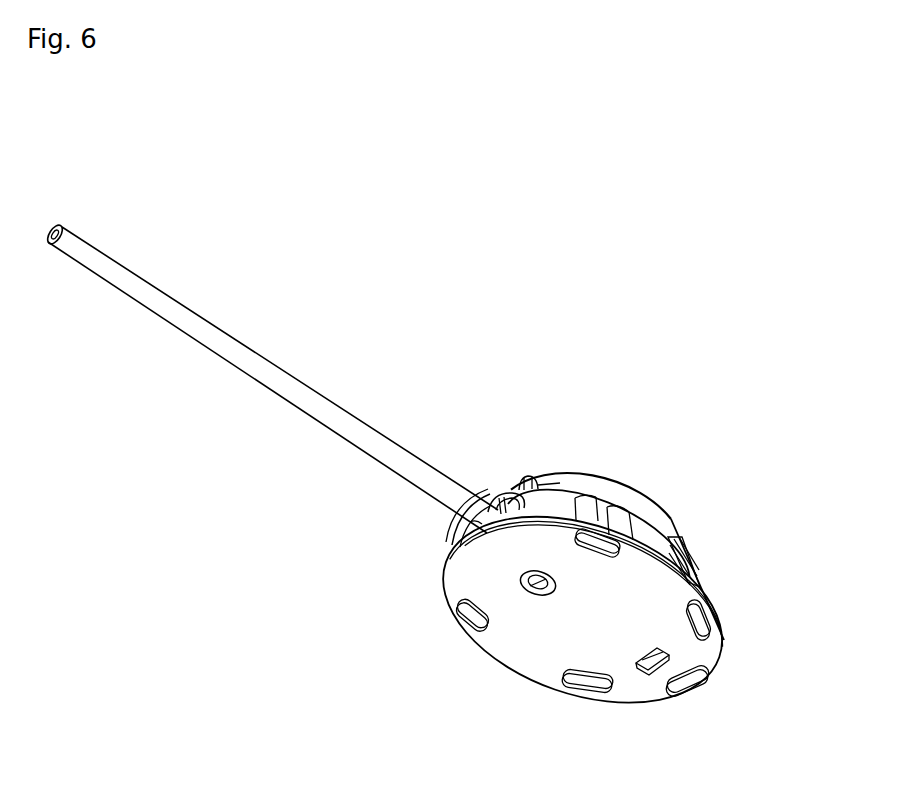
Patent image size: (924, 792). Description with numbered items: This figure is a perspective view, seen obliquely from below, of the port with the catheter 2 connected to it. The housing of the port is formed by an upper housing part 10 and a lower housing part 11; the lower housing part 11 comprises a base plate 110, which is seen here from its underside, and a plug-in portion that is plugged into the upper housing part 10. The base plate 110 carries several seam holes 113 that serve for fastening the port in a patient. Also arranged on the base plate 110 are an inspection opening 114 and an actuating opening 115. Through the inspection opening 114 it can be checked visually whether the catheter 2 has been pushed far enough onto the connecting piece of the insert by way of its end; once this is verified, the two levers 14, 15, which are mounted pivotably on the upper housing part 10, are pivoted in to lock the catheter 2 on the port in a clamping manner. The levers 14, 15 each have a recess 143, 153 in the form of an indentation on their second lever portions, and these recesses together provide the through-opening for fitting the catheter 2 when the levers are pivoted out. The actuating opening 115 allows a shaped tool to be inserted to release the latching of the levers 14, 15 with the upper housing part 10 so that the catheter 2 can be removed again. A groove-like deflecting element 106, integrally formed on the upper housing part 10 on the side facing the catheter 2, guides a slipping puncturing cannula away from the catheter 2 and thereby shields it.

The catheter 2 is at (387, 453).
The upper housing part 10 is at (670, 523).
The lower housing part 11 is at (530, 657).
The lever 14 is at (560, 502).
The lever 15 is at (455, 546).
The deflecting element 106 is at (538, 479).
The base plate 110 is at (452, 588).
The seam holes 113 is at (587, 691).
The inspection opening 114 is at (531, 591).
The actuating opening 115 is at (663, 660).
The recess 143 is at (499, 495).
The recess 153 is at (463, 529).